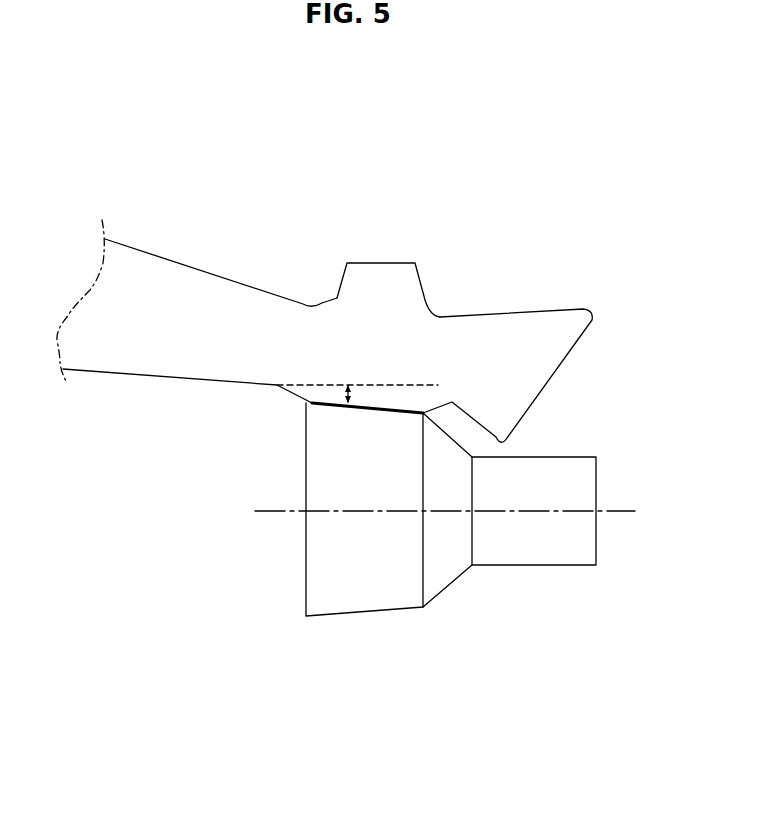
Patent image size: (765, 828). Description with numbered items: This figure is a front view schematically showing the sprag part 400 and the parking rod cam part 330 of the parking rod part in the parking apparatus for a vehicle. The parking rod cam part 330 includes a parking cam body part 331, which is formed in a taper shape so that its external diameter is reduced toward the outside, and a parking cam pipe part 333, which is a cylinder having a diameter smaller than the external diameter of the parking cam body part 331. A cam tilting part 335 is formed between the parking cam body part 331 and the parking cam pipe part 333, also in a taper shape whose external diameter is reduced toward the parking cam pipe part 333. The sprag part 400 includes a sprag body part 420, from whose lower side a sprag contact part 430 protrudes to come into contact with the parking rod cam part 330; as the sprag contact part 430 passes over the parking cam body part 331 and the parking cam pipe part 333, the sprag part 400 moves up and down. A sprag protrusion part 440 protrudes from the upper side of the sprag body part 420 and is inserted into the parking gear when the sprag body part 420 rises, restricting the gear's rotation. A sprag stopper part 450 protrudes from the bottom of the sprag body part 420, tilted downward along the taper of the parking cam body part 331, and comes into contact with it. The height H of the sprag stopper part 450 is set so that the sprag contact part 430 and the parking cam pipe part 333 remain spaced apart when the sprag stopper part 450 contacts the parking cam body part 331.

The sprag part 400 is at (324, 254).
The sprag body part 420 is at (202, 308).
The sprag contact part 430 is at (502, 427).
The sprag protrusion part 440 is at (375, 280).
The sprag stopper part 450 is at (390, 412).
The parking rod cam part 330 is at (445, 593).
The parking cam body part 331 is at (393, 610).
The parking cam pipe part 333 is at (535, 565).
The cam tilting part 335 is at (458, 443).
The height of the sprag stopper part H is at (343, 394).